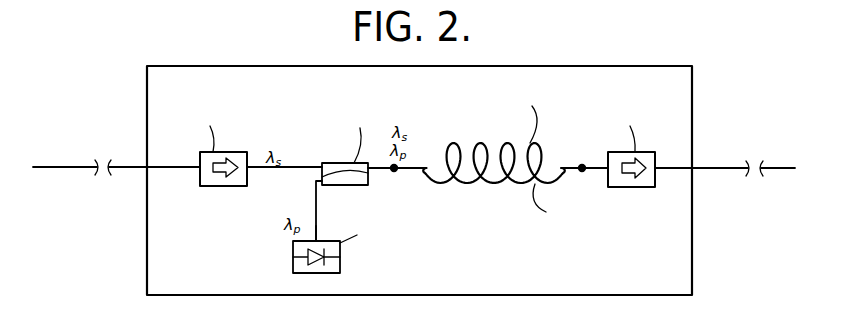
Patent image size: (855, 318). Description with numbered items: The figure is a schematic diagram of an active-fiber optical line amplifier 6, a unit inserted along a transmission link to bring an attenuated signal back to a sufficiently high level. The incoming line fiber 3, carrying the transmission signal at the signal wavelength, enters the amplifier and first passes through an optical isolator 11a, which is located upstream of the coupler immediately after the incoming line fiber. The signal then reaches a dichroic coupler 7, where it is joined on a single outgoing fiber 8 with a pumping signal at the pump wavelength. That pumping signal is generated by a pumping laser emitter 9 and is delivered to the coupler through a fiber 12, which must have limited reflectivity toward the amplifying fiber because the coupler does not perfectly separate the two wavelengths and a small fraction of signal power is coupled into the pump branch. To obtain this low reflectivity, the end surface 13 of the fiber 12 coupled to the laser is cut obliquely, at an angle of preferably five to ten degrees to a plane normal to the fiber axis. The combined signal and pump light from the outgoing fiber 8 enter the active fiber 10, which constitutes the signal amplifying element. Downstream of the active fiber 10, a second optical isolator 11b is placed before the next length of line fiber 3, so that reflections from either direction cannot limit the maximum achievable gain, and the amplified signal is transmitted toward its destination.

The line amplifier 6 is at (166, 66).
The line fiber 3 is at (62, 166).
The optical isolator 11a is at (229, 187).
The optical isolator 11b is at (638, 188).
The dichroic coupler 7 is at (342, 186).
The outgoing fiber 8 is at (392, 172).
The active fiber 10 is at (508, 184).
The fiber 12 is at (316, 196).
The end surface 13 is at (292, 238).
The pumping laser emitter 9 is at (292, 262).